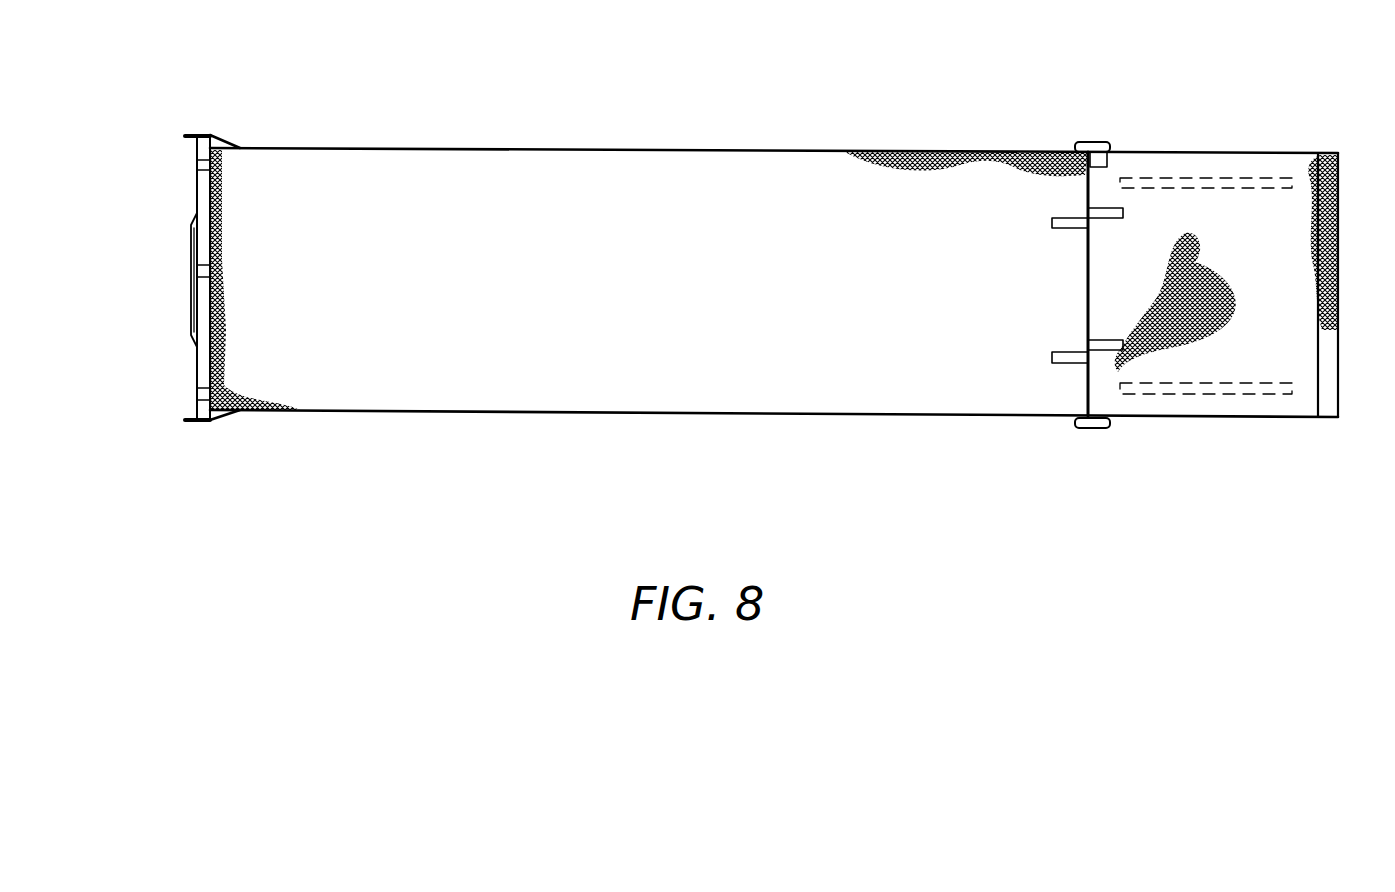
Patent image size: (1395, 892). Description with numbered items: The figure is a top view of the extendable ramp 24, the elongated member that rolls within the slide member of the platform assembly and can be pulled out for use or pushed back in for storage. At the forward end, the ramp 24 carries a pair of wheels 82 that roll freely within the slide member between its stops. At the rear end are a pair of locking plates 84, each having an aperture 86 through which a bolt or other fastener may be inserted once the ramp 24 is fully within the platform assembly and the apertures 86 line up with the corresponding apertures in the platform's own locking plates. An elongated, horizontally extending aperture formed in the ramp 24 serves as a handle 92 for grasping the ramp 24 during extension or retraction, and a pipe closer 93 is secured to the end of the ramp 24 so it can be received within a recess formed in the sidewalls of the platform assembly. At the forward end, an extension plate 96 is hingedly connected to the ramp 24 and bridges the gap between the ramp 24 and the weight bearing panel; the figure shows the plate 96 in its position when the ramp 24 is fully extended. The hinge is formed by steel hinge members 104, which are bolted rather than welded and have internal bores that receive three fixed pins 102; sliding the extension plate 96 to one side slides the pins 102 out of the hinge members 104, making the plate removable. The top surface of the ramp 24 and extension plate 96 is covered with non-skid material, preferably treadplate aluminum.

The ramp 24 is at (645, 413).
The wheels 82 is at (1083, 142).
The locking plates 84 is at (188, 420).
The aperture 86 is at (191, 130).
The handle 92 is at (190, 262).
The pipe closer 93 is at (200, 155).
The extension plate 96 is at (1292, 410).
The fixed pins 102 is at (1086, 362).
The hinge members 104 is at (1086, 346).